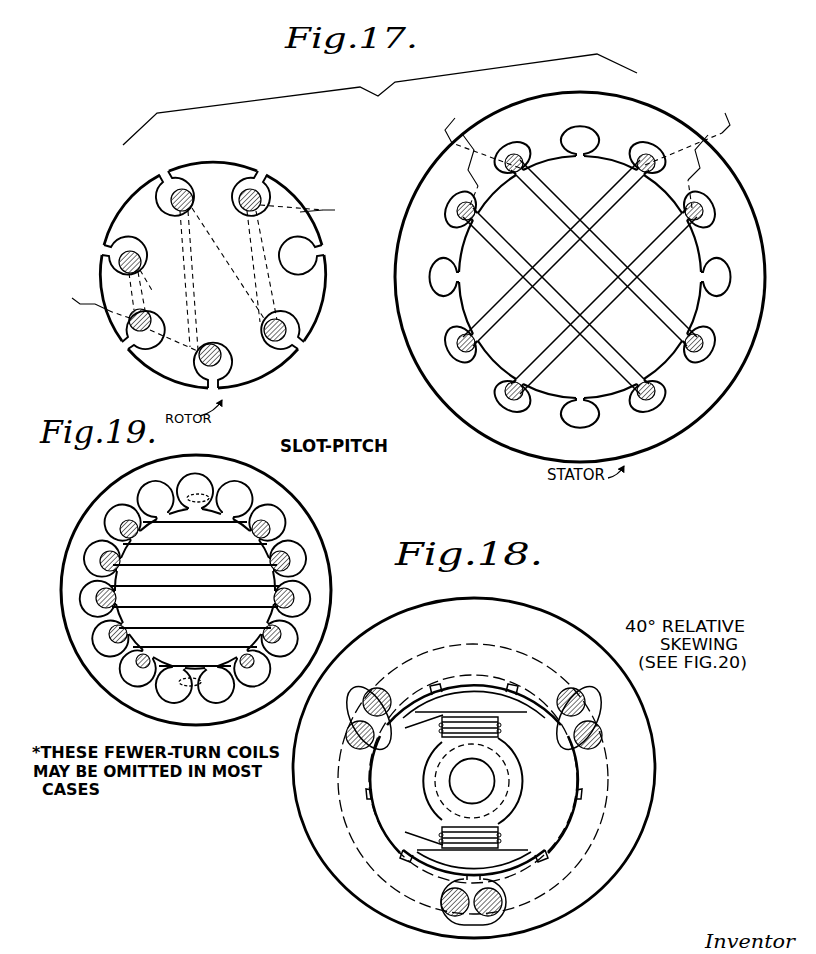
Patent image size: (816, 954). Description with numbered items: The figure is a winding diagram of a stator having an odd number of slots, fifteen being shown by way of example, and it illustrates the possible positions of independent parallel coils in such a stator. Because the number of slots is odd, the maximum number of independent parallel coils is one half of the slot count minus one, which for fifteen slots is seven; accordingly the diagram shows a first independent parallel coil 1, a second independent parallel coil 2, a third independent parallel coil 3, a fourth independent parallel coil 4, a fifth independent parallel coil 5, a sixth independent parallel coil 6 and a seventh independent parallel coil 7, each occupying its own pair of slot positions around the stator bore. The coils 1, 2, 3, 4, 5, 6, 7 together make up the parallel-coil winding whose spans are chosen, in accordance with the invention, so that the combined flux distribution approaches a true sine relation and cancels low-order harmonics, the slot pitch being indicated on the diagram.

The independent parallel coil 1 is at (186, 684).
The independent parallel coil 2 is at (210, 497).
The independent parallel coil 3 is at (136, 662).
The independent parallel coil 4 is at (262, 519).
The independent parallel coil 5 is at (108, 634).
The independent parallel coil 6 is at (280, 551).
The independent parallel coil 7 is at (284, 588).